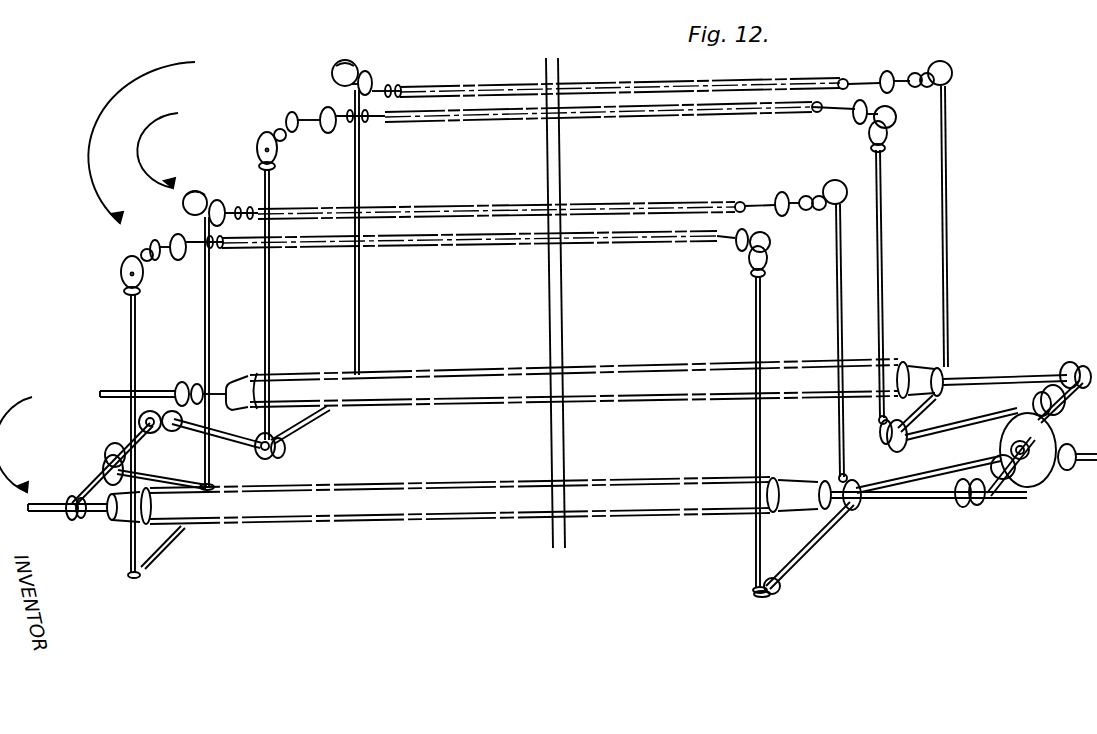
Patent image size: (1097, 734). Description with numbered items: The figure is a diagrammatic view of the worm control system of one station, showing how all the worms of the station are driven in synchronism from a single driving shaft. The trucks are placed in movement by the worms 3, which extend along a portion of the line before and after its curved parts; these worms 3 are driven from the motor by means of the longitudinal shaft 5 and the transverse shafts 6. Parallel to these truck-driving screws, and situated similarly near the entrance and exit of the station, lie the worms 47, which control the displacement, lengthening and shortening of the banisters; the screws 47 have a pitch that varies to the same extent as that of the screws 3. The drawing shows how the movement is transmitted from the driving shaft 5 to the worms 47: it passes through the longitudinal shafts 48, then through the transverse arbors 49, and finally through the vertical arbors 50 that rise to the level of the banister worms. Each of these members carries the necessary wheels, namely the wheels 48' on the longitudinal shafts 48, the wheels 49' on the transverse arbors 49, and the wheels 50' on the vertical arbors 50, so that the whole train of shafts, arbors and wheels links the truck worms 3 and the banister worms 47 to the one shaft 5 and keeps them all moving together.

The worm 3 is at (503, 398).
The longitudinal shaft 5 is at (1096, 457).
The transverse shaft 6 is at (1017, 488).
The worm 47 is at (612, 98).
The longitudinal shaft 48 is at (545, 457).
The wheel 48' is at (481, 431).
The transverse arbor 49 is at (612, 484).
The wheel 49' is at (548, 515).
The vertical arbor 50 is at (540, 339).
The wheel 50' is at (542, 158).